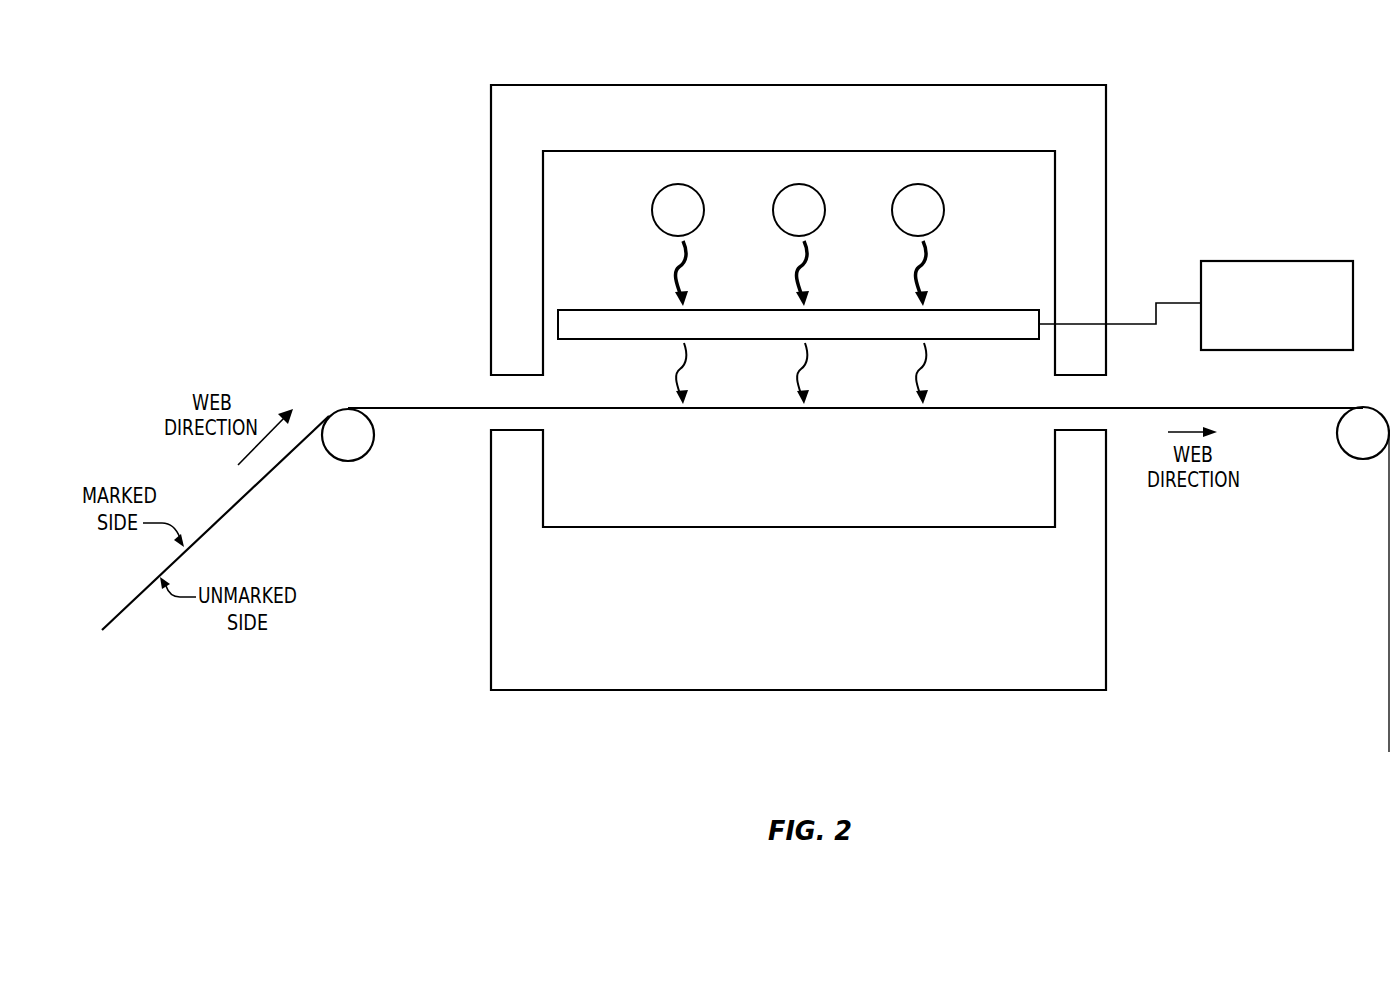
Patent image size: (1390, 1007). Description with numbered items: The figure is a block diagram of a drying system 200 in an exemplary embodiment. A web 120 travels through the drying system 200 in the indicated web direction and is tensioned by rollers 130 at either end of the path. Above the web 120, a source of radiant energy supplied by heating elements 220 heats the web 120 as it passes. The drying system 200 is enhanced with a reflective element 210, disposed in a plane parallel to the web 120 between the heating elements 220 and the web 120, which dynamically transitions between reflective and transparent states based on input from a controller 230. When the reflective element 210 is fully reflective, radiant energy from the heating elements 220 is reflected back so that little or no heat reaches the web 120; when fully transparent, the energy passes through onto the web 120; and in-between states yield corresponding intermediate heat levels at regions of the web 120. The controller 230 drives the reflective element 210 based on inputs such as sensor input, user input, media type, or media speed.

The drying system 200 is at (299, 88).
The heating elements 220 is at (653, 203).
The reflective element 210 is at (1014, 310).
The controller 230 is at (1298, 337).
The web 120 is at (417, 407).
The rollers 130 is at (356, 461).